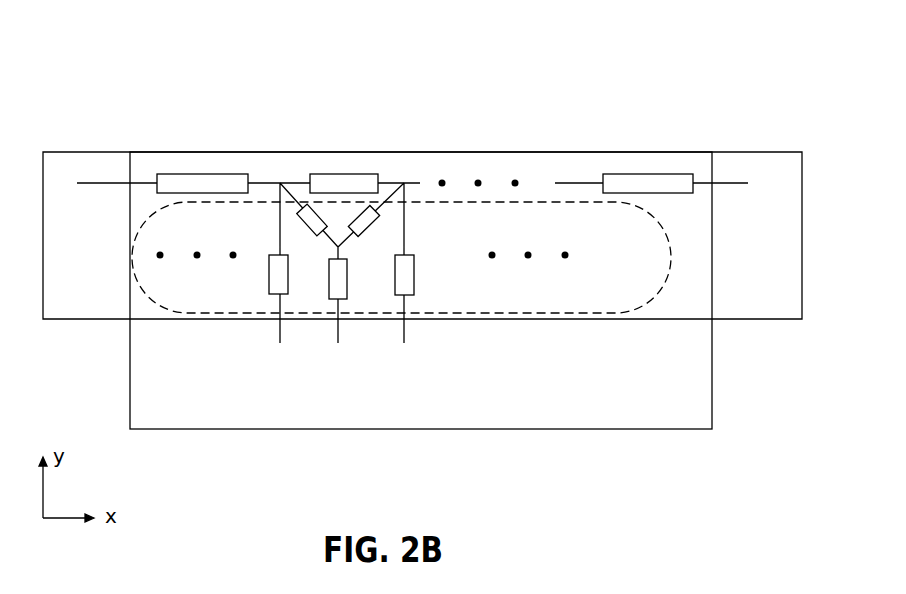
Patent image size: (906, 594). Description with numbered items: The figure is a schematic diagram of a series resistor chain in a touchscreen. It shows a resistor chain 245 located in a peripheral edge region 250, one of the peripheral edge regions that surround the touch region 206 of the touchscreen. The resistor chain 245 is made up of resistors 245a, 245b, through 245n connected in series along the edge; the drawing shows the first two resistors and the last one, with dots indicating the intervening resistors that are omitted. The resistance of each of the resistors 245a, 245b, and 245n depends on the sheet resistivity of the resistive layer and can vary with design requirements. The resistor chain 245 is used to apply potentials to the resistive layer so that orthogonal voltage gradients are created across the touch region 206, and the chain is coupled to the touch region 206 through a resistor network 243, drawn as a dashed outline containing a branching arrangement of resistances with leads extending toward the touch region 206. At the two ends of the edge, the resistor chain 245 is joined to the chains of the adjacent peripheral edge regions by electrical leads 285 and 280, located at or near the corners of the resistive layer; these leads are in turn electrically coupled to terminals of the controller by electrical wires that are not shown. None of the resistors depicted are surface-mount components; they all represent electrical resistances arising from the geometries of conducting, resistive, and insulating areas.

The touch region 206 is at (438, 386).
The resistor network 243 is at (555, 313).
The resistor chain 245 is at (587, 70).
The resistor 245a is at (213, 187).
The resistor 245b is at (347, 187).
The resistor 245n is at (632, 187).
The peripheral edge region 250 is at (652, 158).
The electrical lead 280 is at (743, 158).
The electrical lead 285 is at (96, 160).